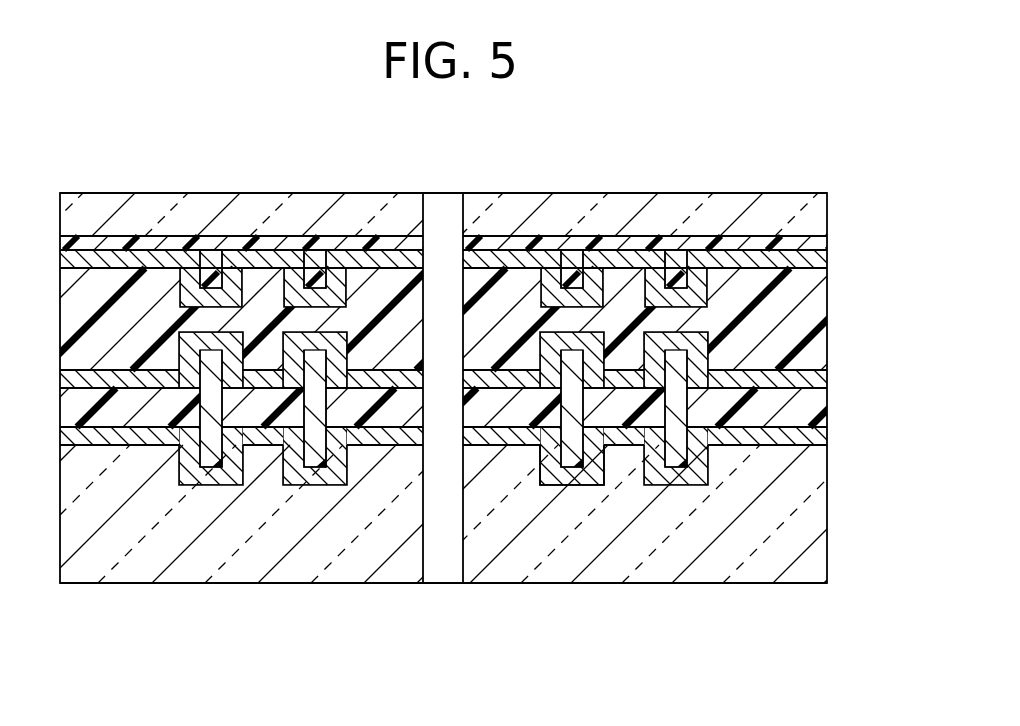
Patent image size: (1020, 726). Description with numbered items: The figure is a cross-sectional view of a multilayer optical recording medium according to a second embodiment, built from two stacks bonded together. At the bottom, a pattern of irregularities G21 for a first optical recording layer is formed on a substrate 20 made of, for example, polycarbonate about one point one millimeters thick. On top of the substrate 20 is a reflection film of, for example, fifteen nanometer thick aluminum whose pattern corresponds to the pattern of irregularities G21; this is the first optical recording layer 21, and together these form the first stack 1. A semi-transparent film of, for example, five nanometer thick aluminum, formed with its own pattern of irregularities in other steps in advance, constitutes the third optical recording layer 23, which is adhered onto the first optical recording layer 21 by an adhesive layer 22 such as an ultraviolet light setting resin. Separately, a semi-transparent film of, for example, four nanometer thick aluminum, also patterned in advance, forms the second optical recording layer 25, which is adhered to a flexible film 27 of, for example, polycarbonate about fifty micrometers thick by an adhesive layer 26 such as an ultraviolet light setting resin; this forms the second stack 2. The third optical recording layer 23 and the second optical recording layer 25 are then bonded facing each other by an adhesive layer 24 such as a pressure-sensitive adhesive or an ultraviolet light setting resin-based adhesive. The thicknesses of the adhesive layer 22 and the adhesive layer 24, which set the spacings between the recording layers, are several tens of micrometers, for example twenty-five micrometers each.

The first stack 1 is at (884, 432).
The second stack 2 is at (884, 197).
The substrate 20 is at (800, 525).
The first optical recording layer 21 is at (823, 445).
The adhesive layer 22 is at (800, 405).
The third optical recording layer 23 is at (827, 374).
The adhesive layer 24 is at (800, 313).
The second optical recording layer 25 is at (800, 258).
The adhesive layer 26 is at (827, 242).
The flexible film 27 is at (800, 208).
The pattern of irregularities G21 is at (537, 468).